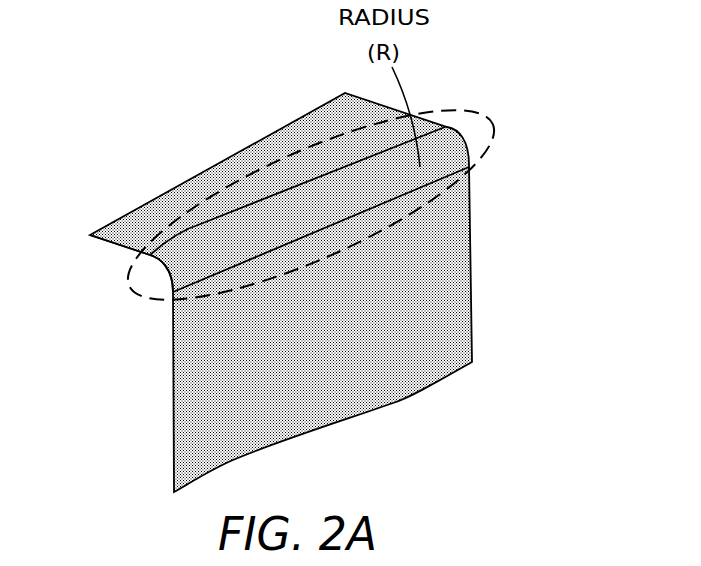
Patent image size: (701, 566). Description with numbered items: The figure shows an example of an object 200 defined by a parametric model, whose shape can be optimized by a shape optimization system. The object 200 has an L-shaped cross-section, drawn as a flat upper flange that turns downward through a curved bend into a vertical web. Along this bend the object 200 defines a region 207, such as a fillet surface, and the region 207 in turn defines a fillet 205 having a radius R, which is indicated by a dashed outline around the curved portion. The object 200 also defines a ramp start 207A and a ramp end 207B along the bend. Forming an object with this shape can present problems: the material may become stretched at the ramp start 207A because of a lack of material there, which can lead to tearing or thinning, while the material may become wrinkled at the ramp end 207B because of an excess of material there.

The object 200 is at (157, 210).
The fillet 205 is at (455, 147).
The region 207 is at (143, 297).
The ramp start 207A is at (233, 240).
The ramp end 207B is at (383, 185).